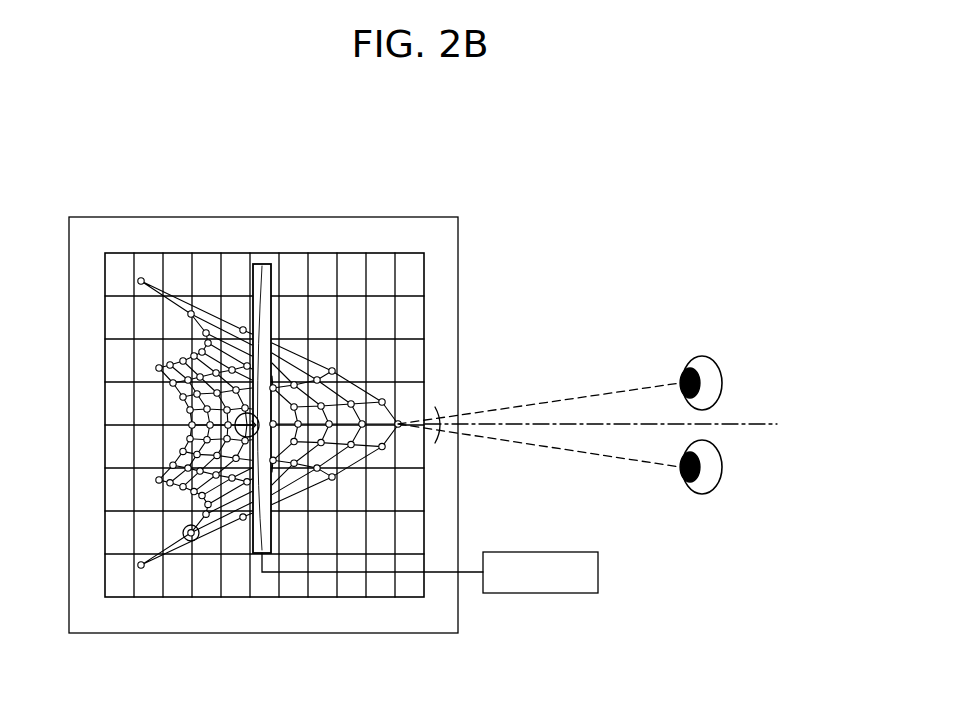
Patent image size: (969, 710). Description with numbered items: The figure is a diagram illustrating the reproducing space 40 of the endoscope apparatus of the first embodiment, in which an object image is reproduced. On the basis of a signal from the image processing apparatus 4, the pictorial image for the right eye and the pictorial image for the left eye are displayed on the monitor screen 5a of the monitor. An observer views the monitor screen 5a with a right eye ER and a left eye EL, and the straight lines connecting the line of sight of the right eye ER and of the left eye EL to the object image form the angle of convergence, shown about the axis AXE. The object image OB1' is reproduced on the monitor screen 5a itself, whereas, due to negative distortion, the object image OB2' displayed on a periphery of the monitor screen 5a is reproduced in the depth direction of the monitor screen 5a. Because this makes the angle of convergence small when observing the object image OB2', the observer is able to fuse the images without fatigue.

The reproducing space 40 is at (175, 252).
The object image OB1' is at (269, 373).
The object image OB2' is at (183, 605).
The monitor screen 5a is at (271, 533).
The image processing apparatus 4 is at (552, 594).
The right eye ER is at (701, 356).
The left eye EL is at (700, 495).
The eye axis AXE is at (757, 421).